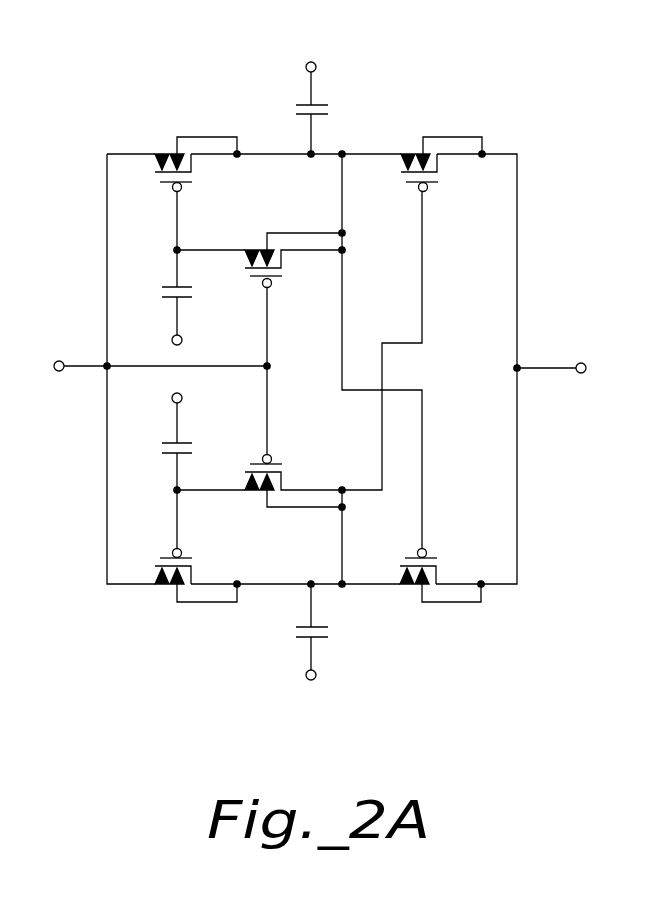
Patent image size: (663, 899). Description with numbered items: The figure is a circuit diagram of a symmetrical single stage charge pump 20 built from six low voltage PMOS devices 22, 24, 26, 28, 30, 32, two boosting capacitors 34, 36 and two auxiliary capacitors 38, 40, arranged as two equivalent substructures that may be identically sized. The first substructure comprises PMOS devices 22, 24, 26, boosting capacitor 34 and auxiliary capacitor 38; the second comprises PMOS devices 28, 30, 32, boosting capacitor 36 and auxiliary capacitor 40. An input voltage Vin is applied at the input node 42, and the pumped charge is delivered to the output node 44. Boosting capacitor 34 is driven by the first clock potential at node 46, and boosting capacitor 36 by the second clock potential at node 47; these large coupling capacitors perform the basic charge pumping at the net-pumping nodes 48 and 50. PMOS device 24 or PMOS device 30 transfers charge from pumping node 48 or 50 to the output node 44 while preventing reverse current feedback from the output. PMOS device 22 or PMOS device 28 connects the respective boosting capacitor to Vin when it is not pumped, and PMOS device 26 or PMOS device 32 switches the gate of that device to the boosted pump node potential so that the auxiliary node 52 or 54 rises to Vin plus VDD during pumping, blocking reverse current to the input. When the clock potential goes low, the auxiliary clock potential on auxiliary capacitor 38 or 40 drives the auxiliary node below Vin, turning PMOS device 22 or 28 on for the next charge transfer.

The symmetrical single stage charge pump 20 is at (148, 730).
The PMOS device 22 is at (168, 596).
The PMOS device 24 is at (432, 592).
The PMOS device 26 is at (275, 470).
The PMOS device 28 is at (170, 140).
The PMOS device 30 is at (413, 146).
The PMOS device 32 is at (283, 270).
The boosting capacitor 34 is at (328, 627).
The boosting capacitor 36 is at (321, 104).
The auxiliary capacitor 38 is at (167, 456).
The auxiliary capacitor 40 is at (165, 298).
The input node 42 is at (63, 361).
The output node 44 is at (584, 373).
The node 46 is at (306, 675).
The node 47 is at (306, 64).
The net-pumping node 48 is at (344, 582).
The net-pumping node 50 is at (344, 157).
The auxiliary node 52 is at (179, 493).
The auxiliary node 54 is at (178, 248).